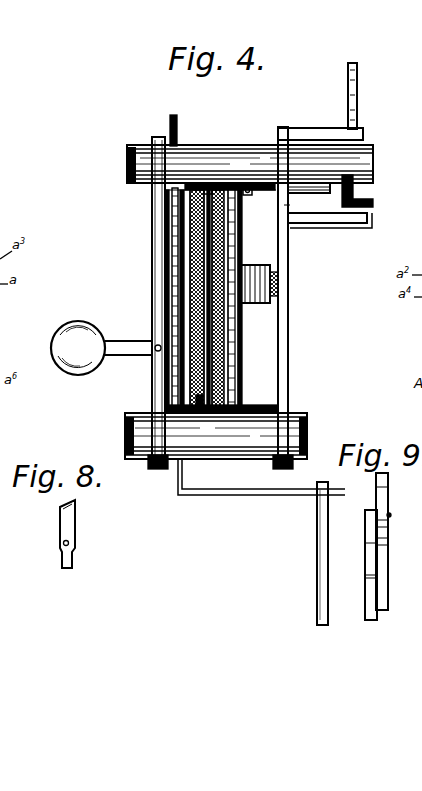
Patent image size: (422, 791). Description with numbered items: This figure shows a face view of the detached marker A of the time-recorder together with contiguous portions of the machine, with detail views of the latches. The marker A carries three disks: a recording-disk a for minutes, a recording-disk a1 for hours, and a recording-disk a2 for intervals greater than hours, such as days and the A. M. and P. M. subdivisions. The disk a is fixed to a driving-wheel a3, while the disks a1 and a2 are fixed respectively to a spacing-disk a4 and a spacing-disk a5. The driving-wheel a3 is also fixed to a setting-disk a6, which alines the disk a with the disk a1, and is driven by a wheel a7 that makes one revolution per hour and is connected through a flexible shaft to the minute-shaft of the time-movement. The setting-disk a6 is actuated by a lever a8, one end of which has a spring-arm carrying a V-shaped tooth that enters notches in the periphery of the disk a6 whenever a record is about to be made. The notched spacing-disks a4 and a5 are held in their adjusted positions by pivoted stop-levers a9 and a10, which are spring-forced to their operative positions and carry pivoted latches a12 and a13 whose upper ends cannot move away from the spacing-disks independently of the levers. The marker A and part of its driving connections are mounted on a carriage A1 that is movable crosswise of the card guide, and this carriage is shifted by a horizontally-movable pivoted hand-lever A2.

In FIG. 4, the recording-disk a is at (165, 410).
In FIG. 4, the recording-disk a1 is at (216, 406).
In FIG. 4, the recording-disk a2 is at (245, 379).
In FIG. 4, the driving-wheel a3 is at (164, 263).
In FIG. 4, the spacing-disk a4 is at (233, 233).
In FIG. 4, the spacing-disk a5 is at (236, 256).
In FIG. 4, the setting-disk a6 is at (166, 376).
In FIG. 4, the wheel a7 is at (177, 122).
In FIG. 4, the lever a8 is at (210, 487).
In FIG. 4, the stop-lever a9 is at (288, 399).
In FIG. 9, the stop-lever a9 is at (366, 552).
In FIG. 4, the stop-lever a10 is at (218, 396).
In FIG. 9, the latch a12 is at (388, 505).
In FIG. 8, the latch a13 is at (72, 531).
In FIG. 4, the marker A is at (236, 323).
In FIG. 4, the carriage A1 is at (288, 381).
In FIG. 4, the hand-lever A2 is at (76, 334).